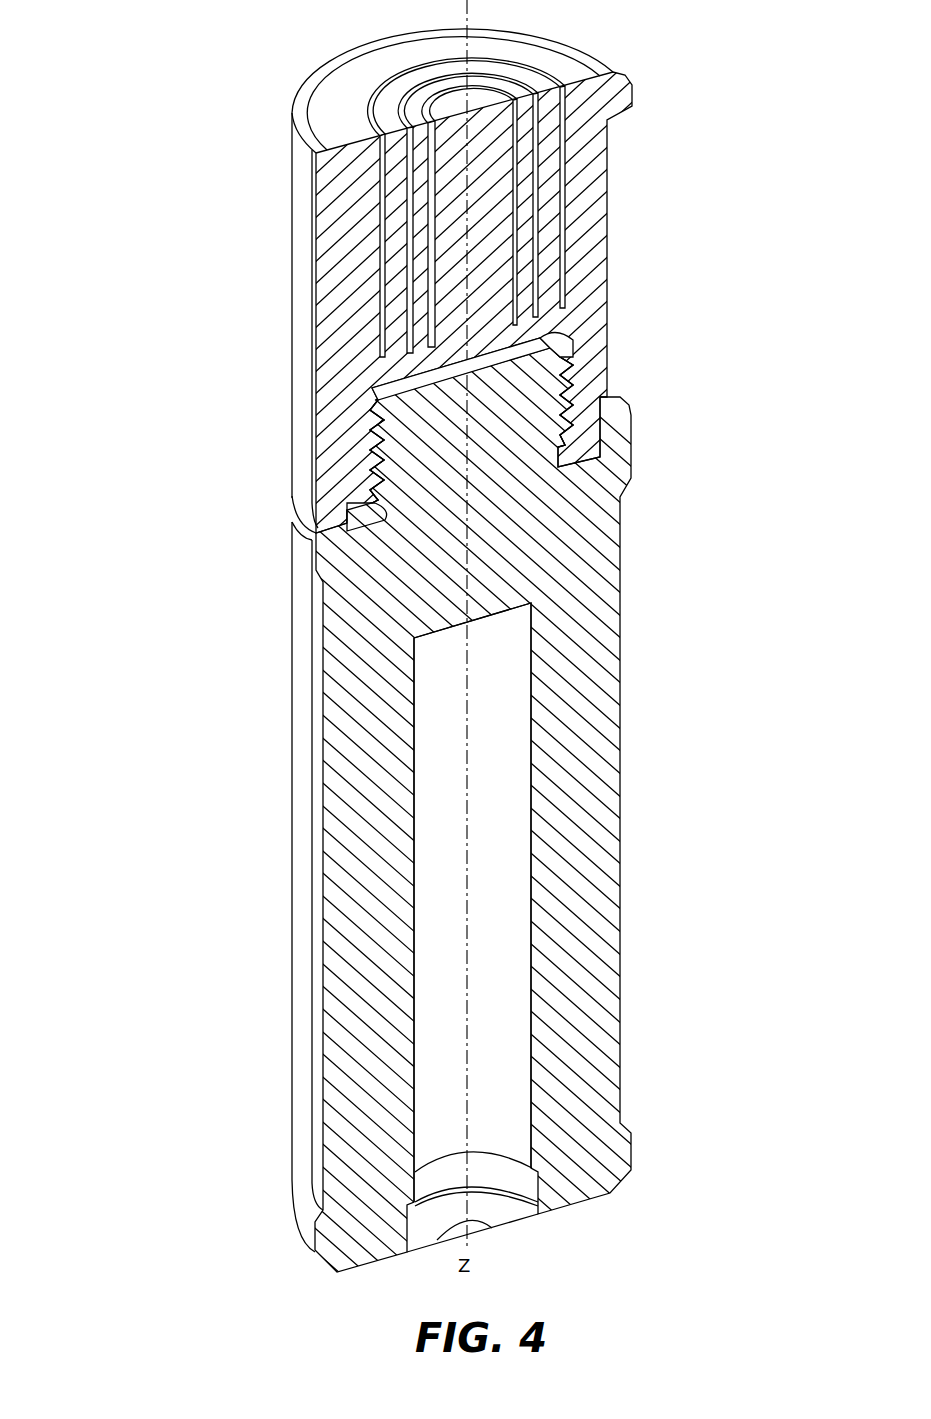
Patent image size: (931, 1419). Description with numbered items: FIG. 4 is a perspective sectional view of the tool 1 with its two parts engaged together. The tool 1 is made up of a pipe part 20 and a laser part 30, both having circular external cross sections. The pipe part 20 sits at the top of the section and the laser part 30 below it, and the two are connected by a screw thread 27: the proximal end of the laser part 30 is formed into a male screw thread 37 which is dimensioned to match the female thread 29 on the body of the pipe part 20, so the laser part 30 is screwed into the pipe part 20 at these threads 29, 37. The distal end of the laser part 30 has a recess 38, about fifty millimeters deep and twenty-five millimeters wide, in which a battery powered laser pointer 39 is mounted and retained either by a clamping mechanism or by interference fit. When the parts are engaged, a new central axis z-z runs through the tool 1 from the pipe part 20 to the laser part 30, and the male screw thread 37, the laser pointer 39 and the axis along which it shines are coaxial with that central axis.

The tool 1 is at (173, 548).
The pipe part 20 is at (668, 248).
The screw thread 27 is at (666, 443).
The female thread 29 is at (580, 378).
The male screw thread 37 is at (669, 361).
The laser part 30 is at (540, 786).
The recess 38 is at (533, 815).
The laser pointer 39 is at (508, 905).